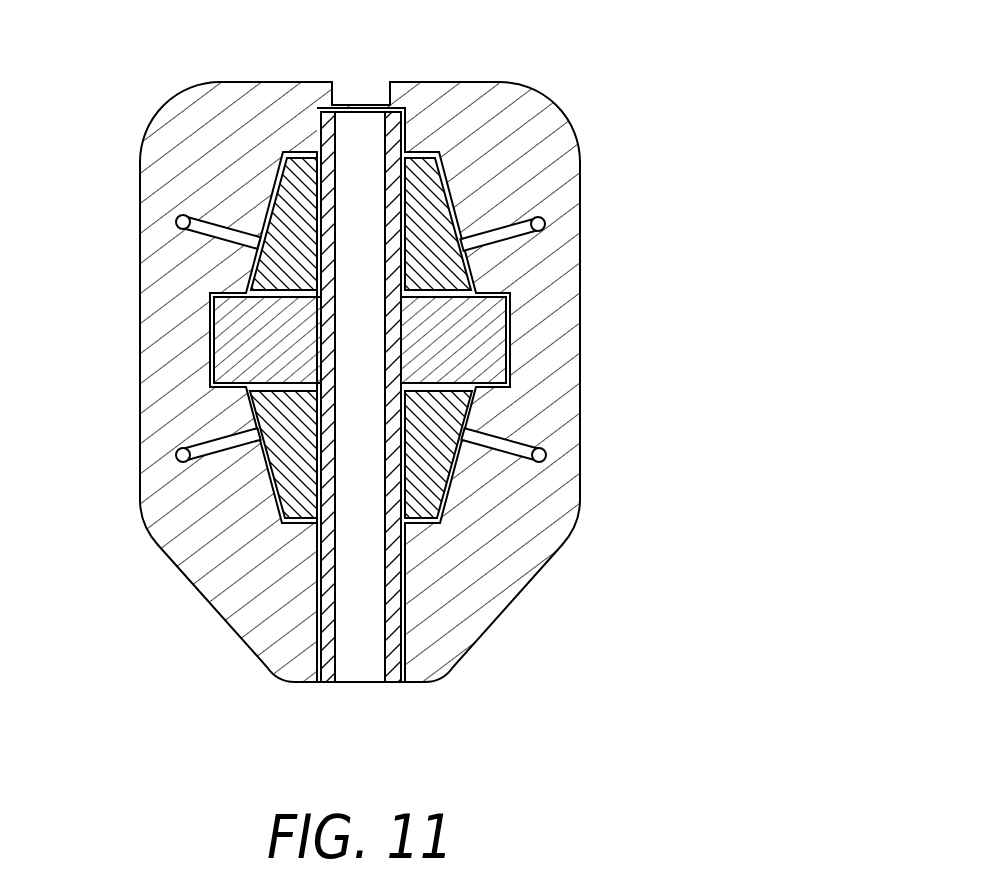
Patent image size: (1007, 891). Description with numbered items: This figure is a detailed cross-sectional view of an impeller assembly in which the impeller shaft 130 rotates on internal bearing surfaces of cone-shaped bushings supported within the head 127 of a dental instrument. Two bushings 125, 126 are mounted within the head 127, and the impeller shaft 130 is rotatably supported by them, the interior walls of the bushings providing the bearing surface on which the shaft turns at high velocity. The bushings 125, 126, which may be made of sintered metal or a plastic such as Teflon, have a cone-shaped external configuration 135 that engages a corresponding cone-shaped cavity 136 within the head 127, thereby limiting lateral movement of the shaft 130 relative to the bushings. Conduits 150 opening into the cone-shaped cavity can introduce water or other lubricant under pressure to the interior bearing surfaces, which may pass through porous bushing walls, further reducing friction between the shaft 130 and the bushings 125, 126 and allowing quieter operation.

The bushing 125 is at (445, 282).
The bushing 126 is at (445, 523).
The head 127 is at (560, 117).
The impeller shaft 130 is at (401, 630).
The cone-shaped external configuration 135 is at (462, 268).
The cone-shaped cavity 136 is at (460, 195).
The conduit 150 is at (197, 212).